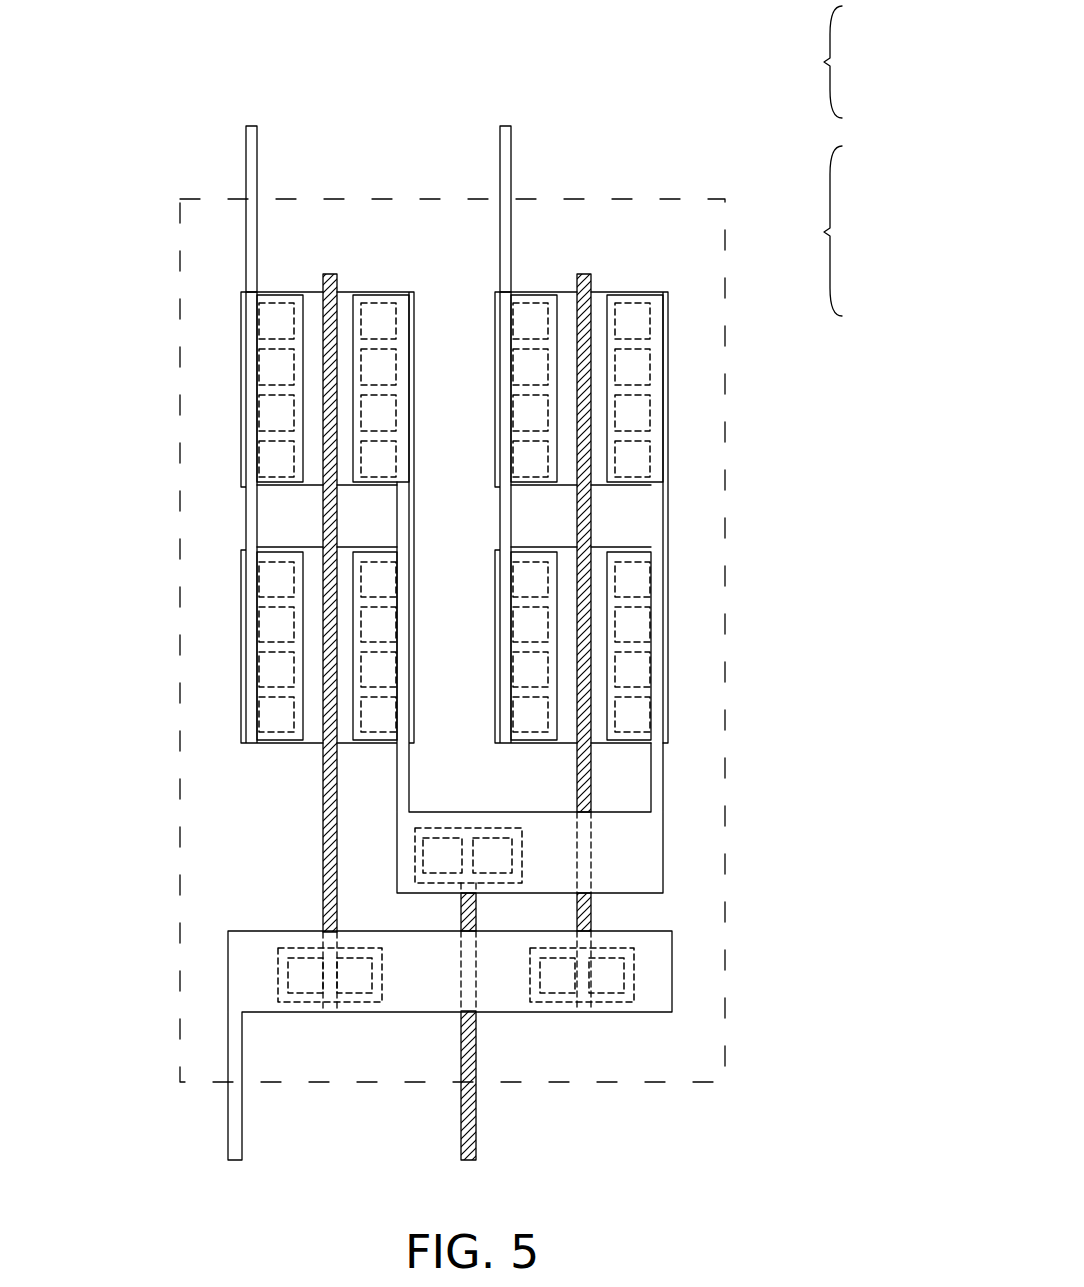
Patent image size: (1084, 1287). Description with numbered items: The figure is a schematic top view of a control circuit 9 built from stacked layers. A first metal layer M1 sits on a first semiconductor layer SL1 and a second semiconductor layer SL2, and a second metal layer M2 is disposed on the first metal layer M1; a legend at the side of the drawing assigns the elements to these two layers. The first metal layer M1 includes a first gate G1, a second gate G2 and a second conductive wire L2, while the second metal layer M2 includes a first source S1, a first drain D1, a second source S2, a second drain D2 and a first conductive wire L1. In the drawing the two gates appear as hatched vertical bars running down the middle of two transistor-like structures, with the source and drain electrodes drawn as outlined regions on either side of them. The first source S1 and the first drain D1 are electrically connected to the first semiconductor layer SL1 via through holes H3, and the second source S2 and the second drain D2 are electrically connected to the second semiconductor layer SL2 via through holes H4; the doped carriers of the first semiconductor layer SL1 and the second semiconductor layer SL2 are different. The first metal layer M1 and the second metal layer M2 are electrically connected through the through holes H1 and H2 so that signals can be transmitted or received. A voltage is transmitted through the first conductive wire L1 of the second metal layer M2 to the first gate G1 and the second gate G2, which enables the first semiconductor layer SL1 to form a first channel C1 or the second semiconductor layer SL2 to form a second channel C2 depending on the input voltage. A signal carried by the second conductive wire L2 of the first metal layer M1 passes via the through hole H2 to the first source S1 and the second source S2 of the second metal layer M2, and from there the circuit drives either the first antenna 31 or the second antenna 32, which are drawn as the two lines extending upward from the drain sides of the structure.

The control circuit 9 is at (182, 265).
The first antenna 31 is at (245, 151).
The second antenna 32 is at (515, 151).
The first channel C1 is at (311, 300).
The second channel C2 is at (565, 300).
The first drain D1 is at (253, 642).
The second drain D2 is at (506, 628).
The first source S1 is at (403, 690).
The second source S2 is at (657, 691).
The first semiconductor layer SL1 is at (345, 478).
The second semiconductor layer SL2 is at (597, 478).
The first gate G1 is at (333, 712).
The second gate G2 is at (591, 726).
The through hole H1 is at (305, 993).
The through hole H2 is at (425, 843).
The through holes H3 is at (262, 427).
The through holes H4 is at (650, 446).
The first conductive wire L1 is at (237, 1125).
The second conductive wire L2 is at (460, 1125).
The first metal layer M1 is at (836, 62).
The second metal layer M2 is at (836, 231).